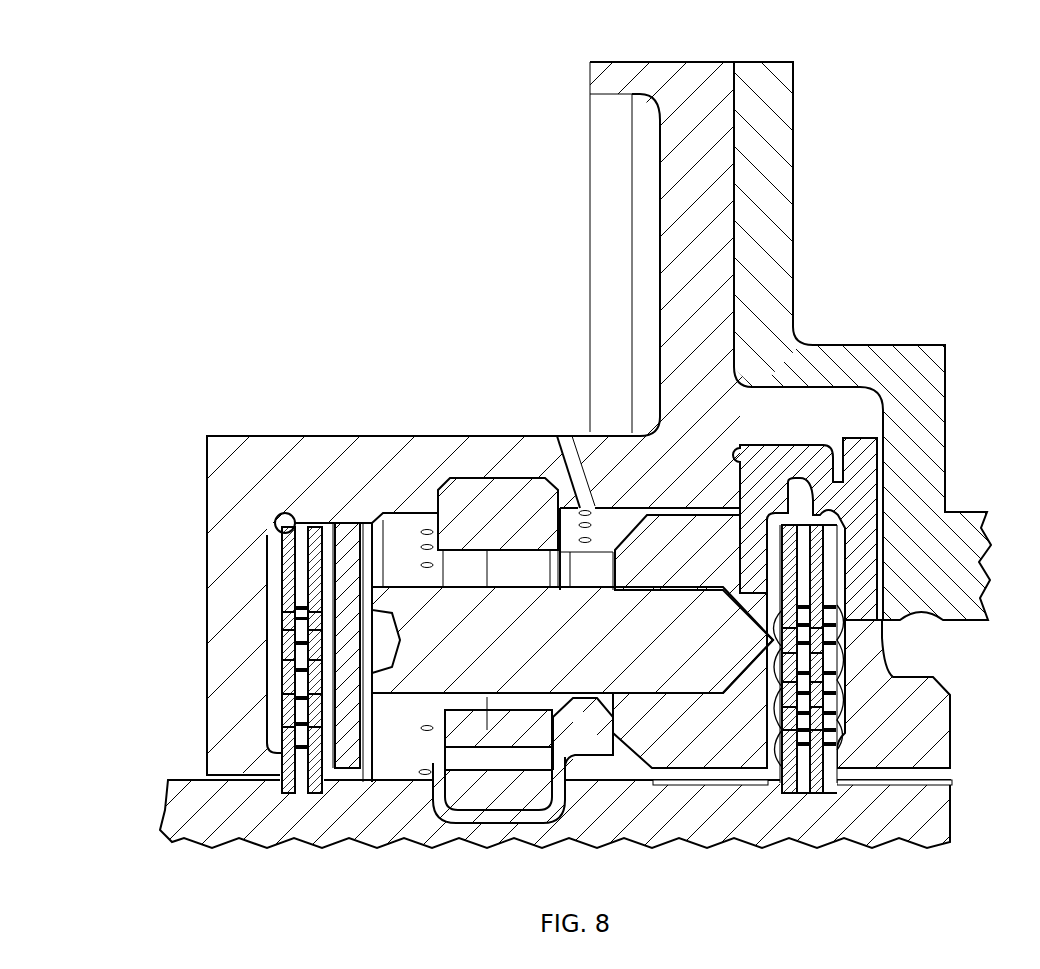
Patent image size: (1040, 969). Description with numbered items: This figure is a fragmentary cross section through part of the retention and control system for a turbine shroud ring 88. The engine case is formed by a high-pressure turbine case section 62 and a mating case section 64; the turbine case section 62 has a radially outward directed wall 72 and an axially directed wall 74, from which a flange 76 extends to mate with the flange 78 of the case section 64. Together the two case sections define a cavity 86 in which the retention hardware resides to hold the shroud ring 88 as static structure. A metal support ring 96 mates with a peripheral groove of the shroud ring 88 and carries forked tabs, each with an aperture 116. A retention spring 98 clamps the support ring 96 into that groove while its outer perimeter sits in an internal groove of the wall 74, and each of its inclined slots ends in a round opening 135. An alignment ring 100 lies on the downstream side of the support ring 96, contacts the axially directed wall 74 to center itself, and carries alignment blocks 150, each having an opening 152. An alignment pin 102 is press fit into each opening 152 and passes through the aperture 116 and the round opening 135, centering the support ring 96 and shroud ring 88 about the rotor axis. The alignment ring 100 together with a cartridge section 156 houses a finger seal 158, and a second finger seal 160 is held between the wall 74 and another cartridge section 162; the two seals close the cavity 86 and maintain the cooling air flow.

The high-pressure turbine case section 62 is at (690, 52).
The case section 64 is at (778, 52).
The radially outward directed wall 72 is at (212, 578).
The axially directed wall 74 is at (255, 440).
The flange 76 is at (675, 157).
The flange 78 is at (787, 157).
The cavity 86 is at (393, 532).
The shroud ring 88 is at (358, 828).
The support ring 96 is at (562, 800).
The retention spring 98 is at (503, 521).
The alignment ring 100 is at (798, 458).
The alignment pin 102 is at (533, 656).
The aperture 116 is at (587, 700).
The round opening 135 is at (448, 703).
The alignment block 150 is at (755, 747).
The opening 152 is at (673, 683).
The cartridge section 156 is at (948, 712).
The finger seal 158 is at (830, 788).
The second finger seal 160 is at (295, 700).
The cartridge section 162 is at (350, 523).